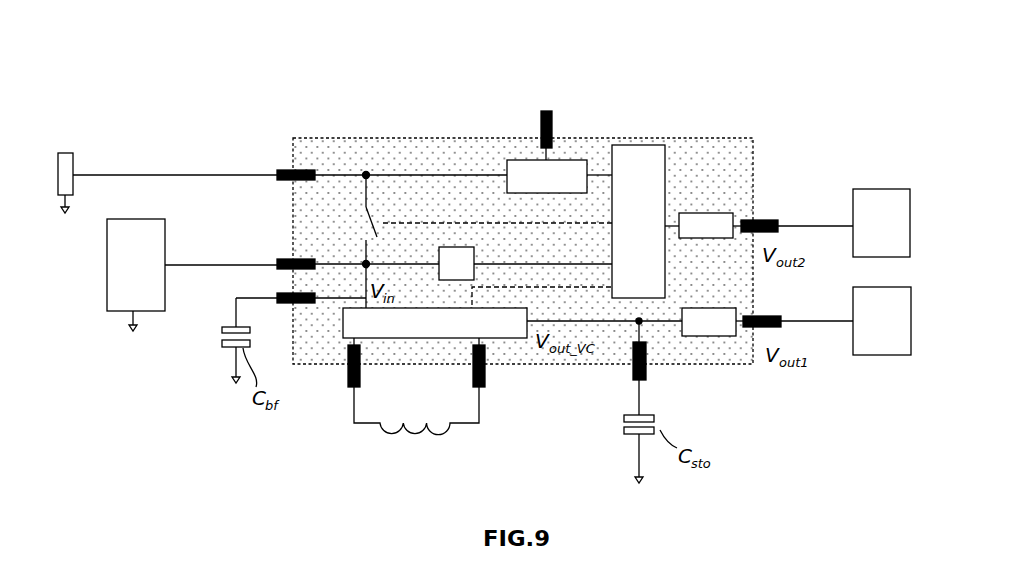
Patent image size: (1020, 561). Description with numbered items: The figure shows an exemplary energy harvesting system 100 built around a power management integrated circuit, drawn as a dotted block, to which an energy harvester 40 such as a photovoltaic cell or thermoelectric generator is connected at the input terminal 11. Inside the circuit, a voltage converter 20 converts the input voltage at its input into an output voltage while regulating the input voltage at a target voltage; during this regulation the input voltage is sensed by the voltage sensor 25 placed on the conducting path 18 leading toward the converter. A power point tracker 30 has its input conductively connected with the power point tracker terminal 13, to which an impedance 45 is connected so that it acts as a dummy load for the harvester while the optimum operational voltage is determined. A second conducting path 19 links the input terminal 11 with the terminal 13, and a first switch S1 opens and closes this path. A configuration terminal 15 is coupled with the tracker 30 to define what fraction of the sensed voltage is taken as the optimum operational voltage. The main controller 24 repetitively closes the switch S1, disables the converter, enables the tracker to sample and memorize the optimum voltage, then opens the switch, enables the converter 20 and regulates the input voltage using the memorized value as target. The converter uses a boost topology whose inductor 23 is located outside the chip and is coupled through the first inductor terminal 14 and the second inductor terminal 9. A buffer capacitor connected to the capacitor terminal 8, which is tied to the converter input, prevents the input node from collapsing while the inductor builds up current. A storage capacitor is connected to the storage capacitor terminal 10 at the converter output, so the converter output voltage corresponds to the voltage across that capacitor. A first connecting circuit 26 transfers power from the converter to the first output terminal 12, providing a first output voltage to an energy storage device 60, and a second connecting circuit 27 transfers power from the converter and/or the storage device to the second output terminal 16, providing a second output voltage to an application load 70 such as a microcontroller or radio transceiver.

The energy harvesting system 100 is at (291, 74).
The impedance 45 is at (67, 152).
The power point tracker terminal 13 is at (285, 170).
The first switch S1 is at (358, 223).
The input terminal 11 is at (277, 262).
The energy harvester 40 is at (107, 268).
The capacitor terminal 8 is at (277, 296).
The second conducting path 19 is at (368, 193).
The conducting path 18 is at (368, 274).
The voltage sensor 25 is at (476, 250).
The power point tracker 30 is at (527, 160).
The configuration terminal 15 is at (546, 110).
The main controller 24 is at (638, 145).
The second connecting circuit 27 is at (710, 213).
The second output terminal 16 is at (770, 221).
The application load 70 is at (882, 189).
The first output terminal 12 is at (780, 316).
The energy storage device 60 is at (878, 355).
The storage capacitor terminal 10 is at (646, 368).
The first connecting circuit 26 is at (705, 336).
The voltage converter 20 is at (503, 337).
The second inductor terminal 9 is at (482, 387).
The first inductor terminal 14 is at (350, 387).
The inductor 23 is at (385, 440).